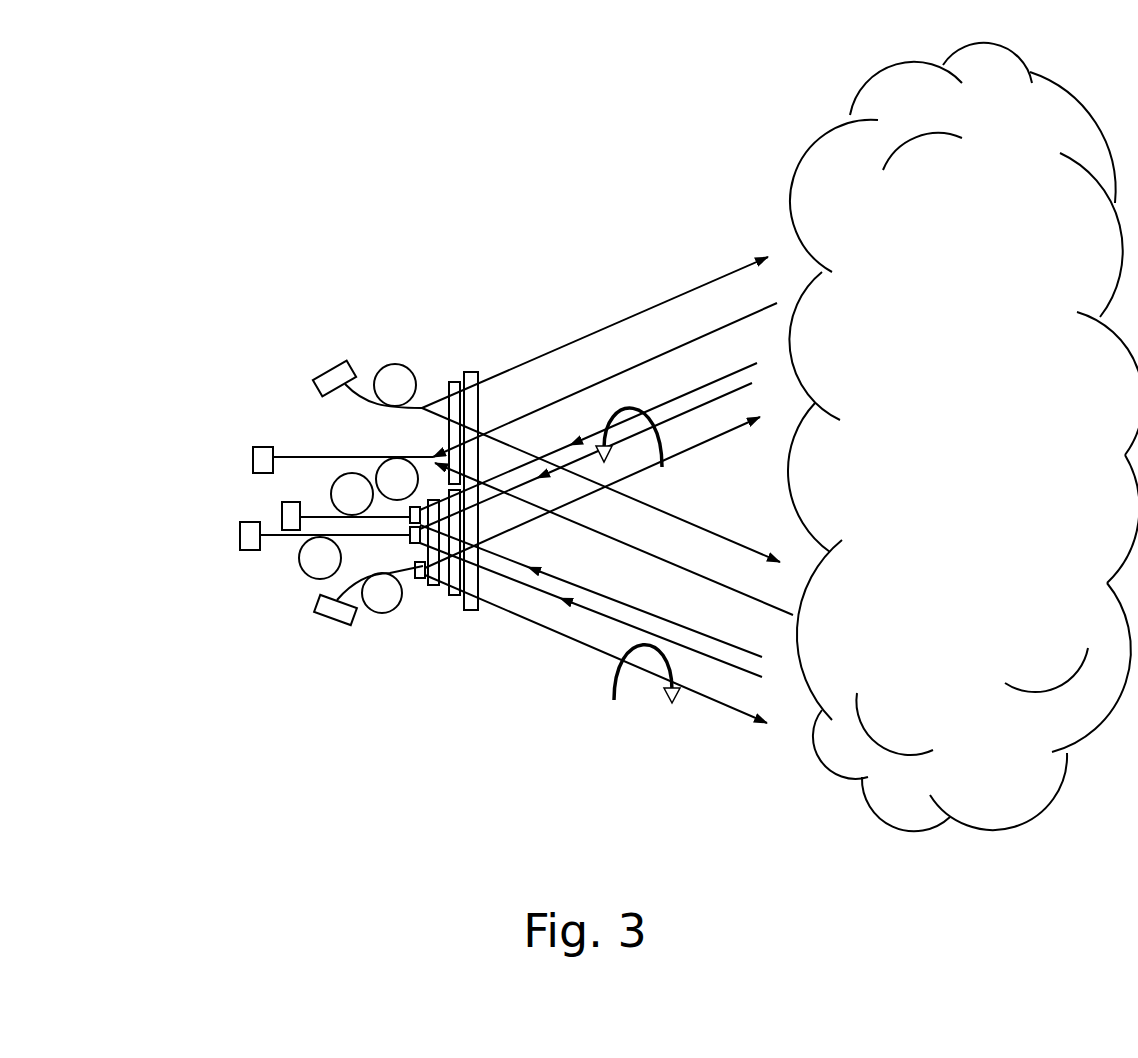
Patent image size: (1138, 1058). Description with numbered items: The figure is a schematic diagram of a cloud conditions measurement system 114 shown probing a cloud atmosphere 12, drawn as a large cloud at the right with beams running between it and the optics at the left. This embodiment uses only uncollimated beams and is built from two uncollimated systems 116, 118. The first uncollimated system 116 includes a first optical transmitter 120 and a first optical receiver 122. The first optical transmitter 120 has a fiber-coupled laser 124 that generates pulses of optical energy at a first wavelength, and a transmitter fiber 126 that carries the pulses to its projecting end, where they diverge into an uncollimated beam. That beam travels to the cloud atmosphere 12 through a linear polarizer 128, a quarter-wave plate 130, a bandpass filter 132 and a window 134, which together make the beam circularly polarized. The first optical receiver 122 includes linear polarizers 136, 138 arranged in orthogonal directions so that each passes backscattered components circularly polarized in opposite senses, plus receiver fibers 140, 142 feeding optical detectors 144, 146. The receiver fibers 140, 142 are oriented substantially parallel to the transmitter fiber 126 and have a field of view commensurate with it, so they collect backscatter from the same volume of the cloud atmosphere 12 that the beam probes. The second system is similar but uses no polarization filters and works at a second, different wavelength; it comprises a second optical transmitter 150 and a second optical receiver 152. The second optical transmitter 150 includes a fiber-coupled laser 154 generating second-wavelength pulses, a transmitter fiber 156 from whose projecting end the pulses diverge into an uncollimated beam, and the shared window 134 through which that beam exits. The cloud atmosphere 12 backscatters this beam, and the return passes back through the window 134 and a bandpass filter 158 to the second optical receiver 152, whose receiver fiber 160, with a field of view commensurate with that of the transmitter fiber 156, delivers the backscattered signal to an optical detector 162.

The cloud atmosphere 12 is at (981, 363).
The cloud conditions measurement system 114 is at (437, 196).
The first uncollimated system 116 is at (305, 652).
The uncollimated system 118 is at (386, 300).
The first optical transmitter 120 is at (295, 598).
The first optical receiver 122 is at (232, 543).
The fiber-coupled laser 124 is at (340, 623).
The transmitter fiber 126 is at (387, 613).
The linear polarizer 128 is at (432, 586).
The quarter-wave plate 130 is at (454, 596).
The bandpass filter 132 is at (470, 610).
The window 134 is at (470, 372).
The linear polarizer 136 is at (449, 488).
The linear polarizer 138 is at (410, 536).
The receiver fiber 140 is at (323, 508).
The receiver fiber 142 is at (300, 562).
The optical detector 144 is at (282, 510).
The optical detector 146 is at (240, 530).
The second optical transmitter 150 is at (318, 360).
The second optical receiver 152 is at (250, 452).
The fiber-coupled laser 154 is at (338, 352).
The transmitter fiber 156 is at (394, 364).
The bandpass filter 158 is at (455, 407).
The receiver fiber 160 is at (352, 473).
The optical detector 162 is at (262, 447).